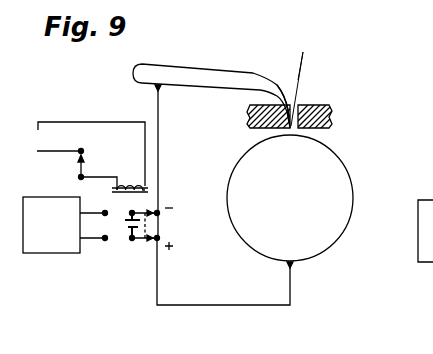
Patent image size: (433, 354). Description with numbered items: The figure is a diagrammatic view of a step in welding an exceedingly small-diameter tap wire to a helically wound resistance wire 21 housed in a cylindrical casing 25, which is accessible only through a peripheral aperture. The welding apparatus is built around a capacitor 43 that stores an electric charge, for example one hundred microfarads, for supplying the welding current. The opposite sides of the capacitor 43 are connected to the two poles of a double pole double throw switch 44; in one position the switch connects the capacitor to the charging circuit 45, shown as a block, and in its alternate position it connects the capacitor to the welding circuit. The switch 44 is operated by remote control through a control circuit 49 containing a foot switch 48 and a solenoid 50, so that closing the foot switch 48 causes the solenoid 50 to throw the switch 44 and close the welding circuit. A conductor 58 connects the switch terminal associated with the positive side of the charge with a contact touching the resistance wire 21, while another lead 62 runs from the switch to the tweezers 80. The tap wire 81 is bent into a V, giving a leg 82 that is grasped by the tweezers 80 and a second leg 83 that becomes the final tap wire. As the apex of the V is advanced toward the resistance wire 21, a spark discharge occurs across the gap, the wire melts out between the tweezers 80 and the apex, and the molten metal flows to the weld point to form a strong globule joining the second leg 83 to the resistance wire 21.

The resistance wire 21 is at (338, 153).
The cylindrical casing 25 is at (330, 109).
The capacitor 43 is at (126, 230).
The double pole double throw switch 44 is at (143, 243).
The charging circuit 45 is at (42, 253).
The foot switch 48 is at (77, 168).
The control circuit 49 is at (82, 96).
The solenoid 50 is at (133, 184).
The conductor 58 is at (220, 304).
The lead 62 is at (158, 100).
The tweezers 80 is at (186, 64).
The tap wire 81 is at (309, 54).
The leg 82 is at (283, 83).
The second leg 83 is at (306, 80).